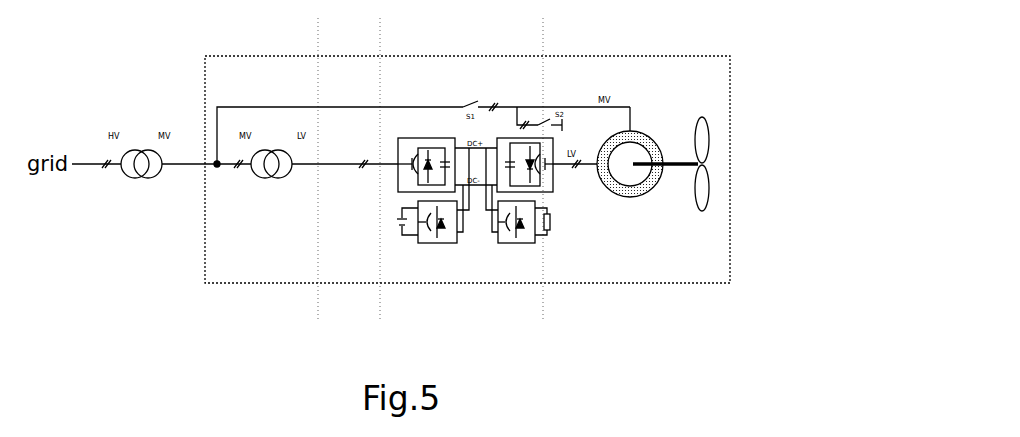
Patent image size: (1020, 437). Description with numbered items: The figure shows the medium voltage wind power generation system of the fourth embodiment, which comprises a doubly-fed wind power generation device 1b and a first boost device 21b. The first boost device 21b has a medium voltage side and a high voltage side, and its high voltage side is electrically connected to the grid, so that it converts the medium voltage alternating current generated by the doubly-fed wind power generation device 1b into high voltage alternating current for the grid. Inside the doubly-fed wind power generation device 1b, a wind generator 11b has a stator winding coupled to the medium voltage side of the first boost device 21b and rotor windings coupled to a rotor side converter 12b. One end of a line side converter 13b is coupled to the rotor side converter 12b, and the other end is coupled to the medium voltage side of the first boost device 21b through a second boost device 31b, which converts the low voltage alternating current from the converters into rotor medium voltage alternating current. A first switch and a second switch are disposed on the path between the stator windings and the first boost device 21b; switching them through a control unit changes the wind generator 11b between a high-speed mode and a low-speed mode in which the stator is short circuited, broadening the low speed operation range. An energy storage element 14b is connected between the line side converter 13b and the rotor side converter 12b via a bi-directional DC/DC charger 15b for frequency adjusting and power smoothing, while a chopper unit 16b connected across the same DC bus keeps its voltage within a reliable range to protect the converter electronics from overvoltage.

The doubly-fed wind power generation device 1b is at (680, 56).
The wind generator 11b is at (657, 132).
The rotor side converter 12b is at (503, 138).
The line side converter 13b is at (403, 138).
The energy storage element 14b is at (392, 221).
The bi-directional DC/DC charger 15b is at (437, 243).
The chopper unit 16b is at (498, 243).
The first boost device 21b is at (142, 150).
The second boost device 31b is at (270, 150).